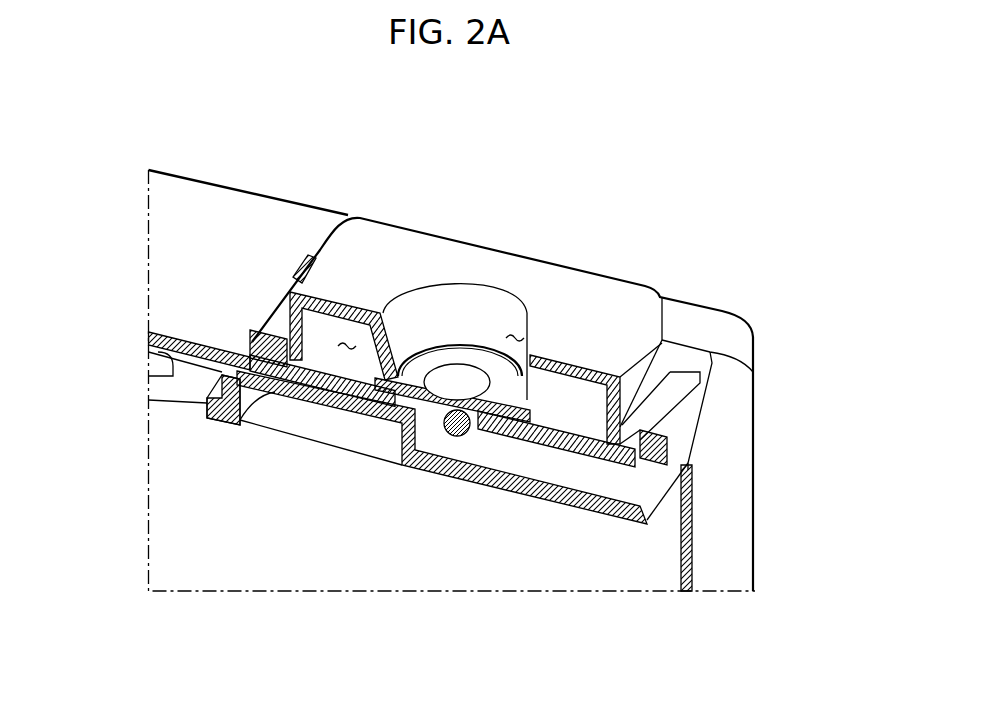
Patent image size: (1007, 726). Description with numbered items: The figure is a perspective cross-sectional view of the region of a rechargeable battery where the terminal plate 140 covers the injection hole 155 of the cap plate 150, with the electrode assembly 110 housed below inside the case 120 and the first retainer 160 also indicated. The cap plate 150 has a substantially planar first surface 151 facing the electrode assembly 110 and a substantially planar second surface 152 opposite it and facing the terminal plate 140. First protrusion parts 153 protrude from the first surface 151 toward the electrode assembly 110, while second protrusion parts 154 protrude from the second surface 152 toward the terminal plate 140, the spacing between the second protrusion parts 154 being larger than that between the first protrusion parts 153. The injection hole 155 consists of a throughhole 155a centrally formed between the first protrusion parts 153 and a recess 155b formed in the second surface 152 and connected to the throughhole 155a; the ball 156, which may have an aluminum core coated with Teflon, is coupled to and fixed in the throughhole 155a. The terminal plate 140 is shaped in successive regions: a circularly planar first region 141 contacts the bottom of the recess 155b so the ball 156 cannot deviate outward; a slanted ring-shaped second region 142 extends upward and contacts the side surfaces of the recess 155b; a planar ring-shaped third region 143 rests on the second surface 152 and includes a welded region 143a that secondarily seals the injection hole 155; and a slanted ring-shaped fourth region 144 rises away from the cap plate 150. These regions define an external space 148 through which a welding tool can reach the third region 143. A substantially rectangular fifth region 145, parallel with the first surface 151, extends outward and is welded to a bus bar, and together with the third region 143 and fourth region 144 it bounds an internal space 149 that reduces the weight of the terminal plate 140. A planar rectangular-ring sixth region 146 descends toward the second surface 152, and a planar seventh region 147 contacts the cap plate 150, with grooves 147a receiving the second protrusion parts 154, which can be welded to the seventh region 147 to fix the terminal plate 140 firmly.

The electrode assembly 110 is at (148, 492).
The case 120 is at (720, 565).
The terminal plate 140 is at (665, 274).
The first region 141 is at (483, 360).
The second region 142 is at (466, 370).
The third region 143 is at (460, 387).
The welded region 143a is at (433, 357).
The fourth region 144 is at (514, 325).
The fifth region 145 is at (605, 297).
The sixth region 146 is at (655, 335).
The seventh region 147 is at (693, 358).
The grooves 147a is at (655, 392).
The external space 148 is at (531, 310).
The internal space 149 is at (350, 343).
The cap plate 150 is at (182, 176).
The first surface 151 is at (173, 374).
The second surface 152 is at (205, 200).
The first protrusion parts 153 is at (425, 430).
The second protrusion parts 154 is at (275, 310).
The injection hole 155 is at (510, 656).
The throughhole 155a is at (435, 438).
The recess 155b is at (460, 438).
The ball 156 is at (473, 438).
The first retainer 160 is at (212, 420).